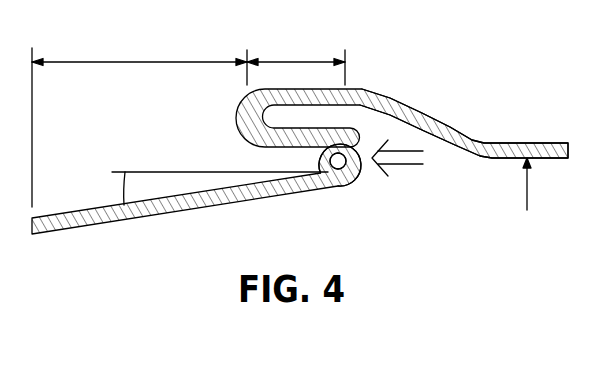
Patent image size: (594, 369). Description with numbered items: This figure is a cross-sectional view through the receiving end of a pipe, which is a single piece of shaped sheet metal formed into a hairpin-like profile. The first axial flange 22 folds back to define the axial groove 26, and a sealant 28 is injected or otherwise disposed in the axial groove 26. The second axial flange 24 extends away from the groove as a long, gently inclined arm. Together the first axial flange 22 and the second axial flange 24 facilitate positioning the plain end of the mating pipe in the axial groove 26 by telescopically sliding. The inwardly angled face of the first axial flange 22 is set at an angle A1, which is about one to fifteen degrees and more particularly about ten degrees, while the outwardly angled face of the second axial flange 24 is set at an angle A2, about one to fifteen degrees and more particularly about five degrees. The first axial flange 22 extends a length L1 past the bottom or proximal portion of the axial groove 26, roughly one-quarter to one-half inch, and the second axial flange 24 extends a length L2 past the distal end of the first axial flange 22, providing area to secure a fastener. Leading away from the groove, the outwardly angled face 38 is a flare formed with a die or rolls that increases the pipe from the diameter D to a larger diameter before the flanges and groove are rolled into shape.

The first axial flange 22 is at (248, 124).
The second axial flange 24 is at (92, 226).
The axial groove 26 is at (363, 168).
The sealant 28 is at (341, 166).
The outwardly angled face 38 is at (440, 120).
The length L1 is at (297, 62).
The length L2 is at (112, 62).
The angle A1 is at (350, 130).
The angle A2 is at (123, 192).
The pipe diameter D is at (527, 198).